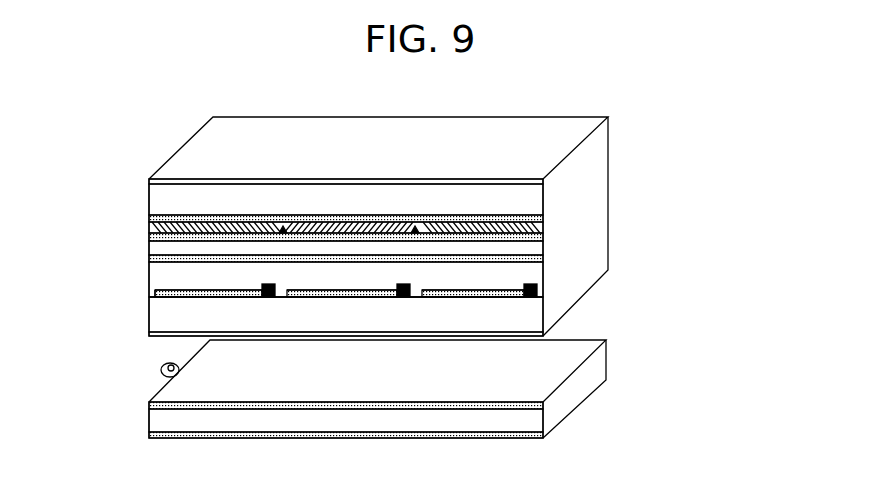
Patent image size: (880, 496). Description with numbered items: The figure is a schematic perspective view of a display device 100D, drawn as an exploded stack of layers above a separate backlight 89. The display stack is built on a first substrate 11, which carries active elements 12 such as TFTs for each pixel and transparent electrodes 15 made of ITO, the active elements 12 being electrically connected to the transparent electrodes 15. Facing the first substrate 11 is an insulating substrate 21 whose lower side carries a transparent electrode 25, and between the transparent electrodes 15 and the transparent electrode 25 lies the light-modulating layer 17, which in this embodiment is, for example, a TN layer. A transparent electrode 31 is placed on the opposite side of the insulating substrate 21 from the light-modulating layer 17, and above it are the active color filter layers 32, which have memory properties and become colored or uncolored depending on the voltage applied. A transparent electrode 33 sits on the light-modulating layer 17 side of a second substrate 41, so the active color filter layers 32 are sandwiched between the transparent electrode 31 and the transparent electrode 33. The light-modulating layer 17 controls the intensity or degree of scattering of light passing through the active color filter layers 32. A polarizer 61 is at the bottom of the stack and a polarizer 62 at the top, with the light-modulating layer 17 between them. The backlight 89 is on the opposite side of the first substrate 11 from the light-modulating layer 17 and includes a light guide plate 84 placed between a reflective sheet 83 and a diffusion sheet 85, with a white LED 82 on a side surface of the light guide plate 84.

The display device 100D is at (666, 124).
The polarizer 62 is at (545, 182).
The second substrate 41 is at (527, 205).
The transparent electrode 33 is at (149, 218).
The active color filter layers 32 is at (149, 228).
The transparent electrode 31 is at (537, 242).
The insulating substrate 21 is at (535, 248).
The transparent electrode 25 is at (149, 257).
The light-modulating layer 17 is at (535, 270).
The transparent electrodes 15 is at (149, 296).
The active elements 12 is at (540, 292).
The first substrate 11 is at (156, 323).
The polarizer 61 is at (545, 334).
The backlight 89 is at (429, 404).
The diffusion sheet 85 is at (543, 405).
The light guide plate 84 is at (535, 420).
The reflective sheet 83 is at (407, 449).
The white LED 82 is at (162, 367).